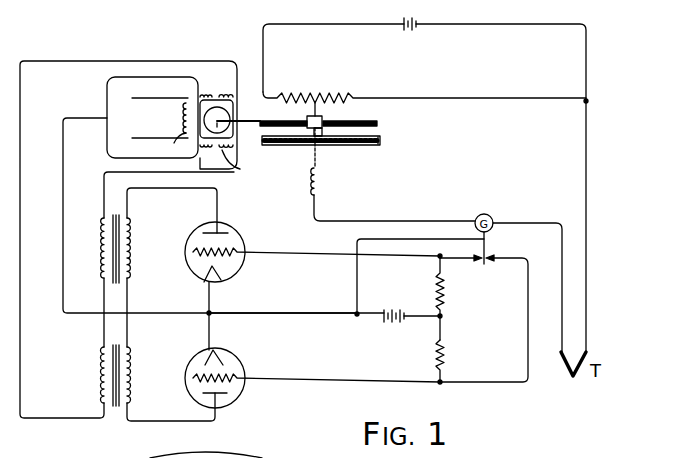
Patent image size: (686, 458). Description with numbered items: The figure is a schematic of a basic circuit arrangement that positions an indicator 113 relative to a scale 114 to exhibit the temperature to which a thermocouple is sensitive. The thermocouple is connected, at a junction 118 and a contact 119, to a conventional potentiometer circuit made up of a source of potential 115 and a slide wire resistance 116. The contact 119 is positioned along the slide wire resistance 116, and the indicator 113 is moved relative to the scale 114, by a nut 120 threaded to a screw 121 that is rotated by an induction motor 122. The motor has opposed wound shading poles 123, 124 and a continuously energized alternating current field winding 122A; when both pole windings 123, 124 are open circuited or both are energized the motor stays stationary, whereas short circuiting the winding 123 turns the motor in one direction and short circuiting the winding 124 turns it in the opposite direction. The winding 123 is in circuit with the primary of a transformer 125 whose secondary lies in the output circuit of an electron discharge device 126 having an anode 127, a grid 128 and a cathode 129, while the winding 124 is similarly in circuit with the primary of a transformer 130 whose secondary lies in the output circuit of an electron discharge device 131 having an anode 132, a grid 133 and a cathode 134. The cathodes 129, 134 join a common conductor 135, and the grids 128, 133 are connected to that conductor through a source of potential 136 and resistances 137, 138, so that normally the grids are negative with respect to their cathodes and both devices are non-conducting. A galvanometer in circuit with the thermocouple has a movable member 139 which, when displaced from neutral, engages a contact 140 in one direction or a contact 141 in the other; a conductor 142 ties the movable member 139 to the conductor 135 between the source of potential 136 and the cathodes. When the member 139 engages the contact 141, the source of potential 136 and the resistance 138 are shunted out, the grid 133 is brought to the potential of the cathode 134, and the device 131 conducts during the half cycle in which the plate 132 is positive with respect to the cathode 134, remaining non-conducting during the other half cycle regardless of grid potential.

The indicator 113 is at (328, 146).
The scale 114 is at (380, 146).
The source of potential 115 is at (410, 36).
The slide wire resistance 116 is at (323, 97).
The junction 118 is at (590, 103).
The contact 119 is at (323, 114).
The nut 120 is at (300, 119).
The screw 121 is at (380, 124).
The induction motor 122 is at (182, 95).
The alternating current field winding 122A is at (160, 147).
The shading pole winding 123 is at (216, 108).
The shading pole winding 124 is at (189, 184).
The transformer 125 is at (113, 406).
The electron discharge device 126 is at (200, 398).
The anode 127 is at (224, 397).
The grid 128 is at (193, 377).
The cathode 129 is at (219, 362).
The transformer 130 is at (110, 283).
The electron discharge device 131 is at (203, 281).
The anode 132 is at (226, 233).
The grid 133 is at (196, 252).
The cathode 134 is at (227, 275).
The common conductor 135 is at (323, 314).
The source of potential 136 is at (398, 329).
The resistance 137 is at (446, 355).
The resistance 138 is at (445, 293).
The movable member 139 is at (487, 243).
The contact 140 is at (491, 262).
The contact 141 is at (478, 262).
The conductor 142 is at (358, 240).